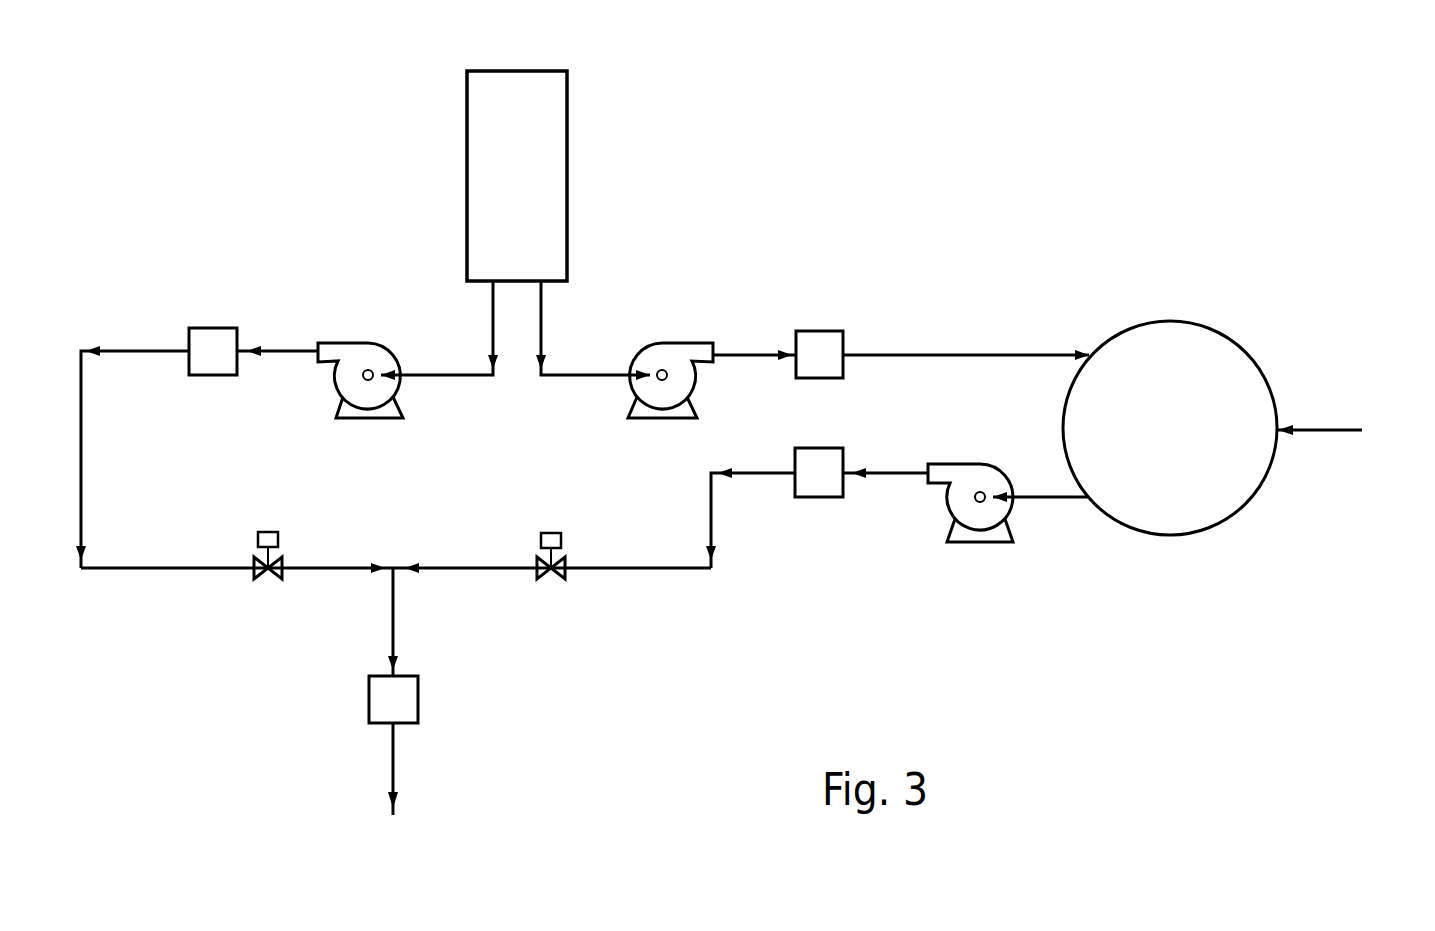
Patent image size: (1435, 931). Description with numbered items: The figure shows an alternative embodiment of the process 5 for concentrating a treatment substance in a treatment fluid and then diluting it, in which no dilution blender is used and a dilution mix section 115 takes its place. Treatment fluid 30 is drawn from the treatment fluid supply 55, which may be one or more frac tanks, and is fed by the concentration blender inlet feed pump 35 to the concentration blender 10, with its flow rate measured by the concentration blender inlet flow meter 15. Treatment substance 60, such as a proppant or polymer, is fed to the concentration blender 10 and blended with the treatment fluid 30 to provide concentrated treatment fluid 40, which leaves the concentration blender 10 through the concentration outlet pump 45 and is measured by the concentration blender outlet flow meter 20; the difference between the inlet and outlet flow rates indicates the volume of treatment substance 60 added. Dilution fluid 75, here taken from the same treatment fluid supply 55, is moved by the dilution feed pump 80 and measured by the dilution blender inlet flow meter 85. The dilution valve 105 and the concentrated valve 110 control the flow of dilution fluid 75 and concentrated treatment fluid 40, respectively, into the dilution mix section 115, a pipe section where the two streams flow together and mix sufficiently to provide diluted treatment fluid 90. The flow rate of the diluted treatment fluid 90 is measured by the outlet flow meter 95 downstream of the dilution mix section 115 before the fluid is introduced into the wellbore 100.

The process 5 is at (1138, 203).
The concentration blender 10 is at (1183, 320).
The concentration blender inlet flow meter 15 is at (820, 331).
The concentration blender outlet flow meter 20 is at (818, 497).
The treatment fluid 30 is at (542, 323).
The concentration blender inlet feed pump 35 is at (677, 343).
The concentrated treatment fluid 40 is at (1062, 498).
The concentration outlet pump 45 is at (948, 462).
The treatment fluid supply 55 is at (567, 135).
The treatment substance 60 is at (1320, 430).
The dilution fluid 75 is at (492, 325).
The dilution feed pump 80 is at (359, 341).
The dilution blender inlet flow meter 85 is at (215, 328).
The diluted treatment fluid 90 is at (393, 618).
The outlet flow meter 95 is at (418, 697).
The wellbore 100 is at (394, 842).
The dilution valve 105 is at (268, 581).
The concentrated valve 110 is at (551, 581).
The dilution mix section 115 is at (395, 568).